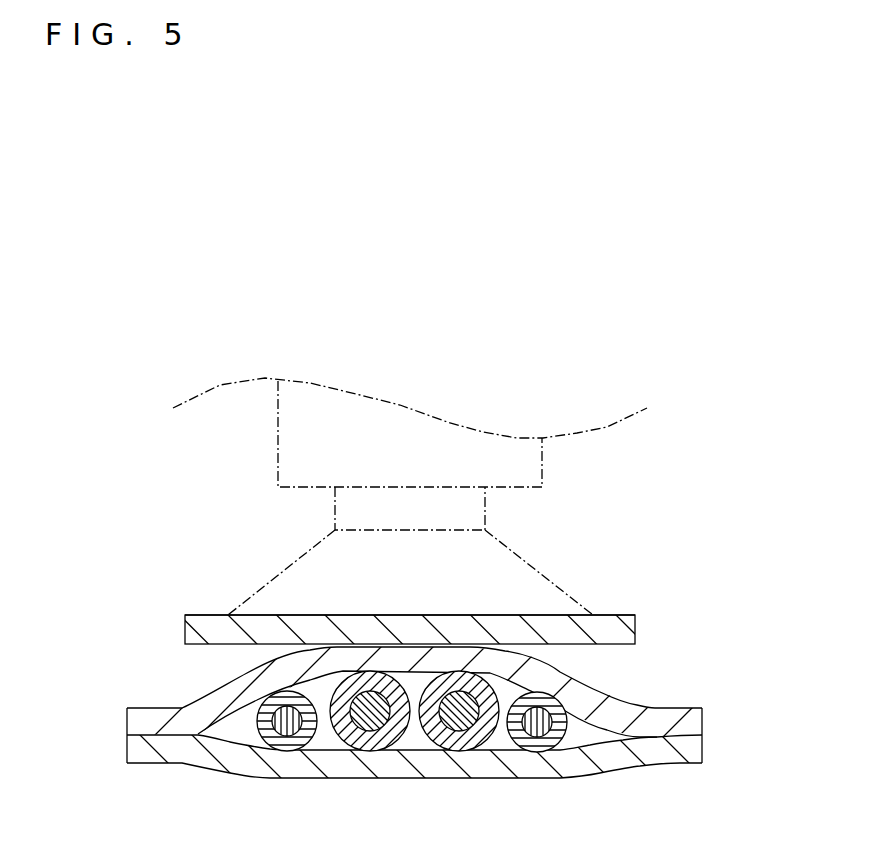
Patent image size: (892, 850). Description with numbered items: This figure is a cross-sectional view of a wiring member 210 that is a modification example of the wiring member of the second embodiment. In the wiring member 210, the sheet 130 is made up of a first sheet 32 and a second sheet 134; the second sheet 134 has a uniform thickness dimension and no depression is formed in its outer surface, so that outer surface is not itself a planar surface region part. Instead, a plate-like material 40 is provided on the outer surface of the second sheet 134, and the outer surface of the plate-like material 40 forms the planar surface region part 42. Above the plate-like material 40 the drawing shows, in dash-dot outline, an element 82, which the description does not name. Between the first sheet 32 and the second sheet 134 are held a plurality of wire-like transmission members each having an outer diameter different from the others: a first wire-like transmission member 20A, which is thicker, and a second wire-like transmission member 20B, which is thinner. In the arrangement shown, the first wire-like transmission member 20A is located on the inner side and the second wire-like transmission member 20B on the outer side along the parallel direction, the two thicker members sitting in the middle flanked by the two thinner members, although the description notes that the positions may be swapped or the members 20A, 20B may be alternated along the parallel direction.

The wiring member 210 is at (143, 207).
The ultrasonic horn 82 is at (508, 563).
The plate-like material 40 is at (637, 631).
The planar surface region part 42 is at (205, 614).
The sheet 130 is at (459, 720).
The second sheet 134 is at (703, 721).
The first sheet 32 is at (703, 749).
The first wire-like transmission member 20A is at (437, 745).
The second wire-like transmission member 20B is at (299, 746).